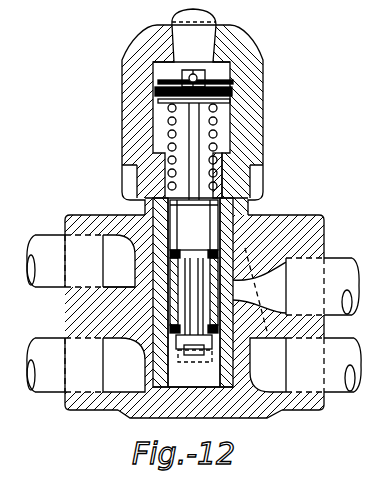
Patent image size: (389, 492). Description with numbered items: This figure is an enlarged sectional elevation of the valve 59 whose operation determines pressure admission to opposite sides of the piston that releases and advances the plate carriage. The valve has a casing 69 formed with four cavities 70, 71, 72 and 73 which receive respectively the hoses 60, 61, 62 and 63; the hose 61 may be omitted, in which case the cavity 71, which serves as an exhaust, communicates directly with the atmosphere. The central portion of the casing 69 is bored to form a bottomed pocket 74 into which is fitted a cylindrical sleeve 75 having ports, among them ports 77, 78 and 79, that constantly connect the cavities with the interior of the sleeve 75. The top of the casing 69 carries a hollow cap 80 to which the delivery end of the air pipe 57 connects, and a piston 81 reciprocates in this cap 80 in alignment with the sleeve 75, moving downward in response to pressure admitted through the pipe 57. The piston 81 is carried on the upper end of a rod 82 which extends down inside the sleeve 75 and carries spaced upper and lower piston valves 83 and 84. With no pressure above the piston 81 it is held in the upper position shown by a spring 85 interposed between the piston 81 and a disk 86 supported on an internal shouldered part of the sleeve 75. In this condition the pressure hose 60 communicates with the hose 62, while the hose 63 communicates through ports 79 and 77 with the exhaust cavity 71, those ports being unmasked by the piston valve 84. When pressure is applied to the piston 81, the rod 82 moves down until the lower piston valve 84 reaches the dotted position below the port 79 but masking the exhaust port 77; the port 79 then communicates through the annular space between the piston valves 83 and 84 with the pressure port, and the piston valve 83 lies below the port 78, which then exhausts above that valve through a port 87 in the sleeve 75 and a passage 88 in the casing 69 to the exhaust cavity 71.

The air pipe 57 is at (218, 13).
The valve 59 is at (311, 113).
The hose 60 is at (345, 258).
The hose 61 is at (340, 398).
The hose 62 is at (43, 235).
The hose 63 is at (49, 400).
The casing 69 is at (299, 412).
The cavity 70 is at (280, 294).
The cavity 71 is at (282, 367).
The cavity 72 is at (128, 272).
The cavity 73 is at (128, 367).
The bottomed pocket 74 is at (112, 411).
The cylindrical sleeve 75 is at (160, 372).
The port 77 is at (222, 387).
The port 78 is at (158, 235).
The port 79 is at (153, 323).
The hollow cap 80 is at (255, 72).
The piston 81 is at (224, 66).
The rod 82 is at (205, 143).
The upper piston valve 83 is at (181, 238).
The lower piston valve 84 is at (204, 349).
The spring 85 is at (220, 122).
The disk 86 is at (233, 178).
The port 87 is at (250, 206).
The passage 88 is at (260, 286).